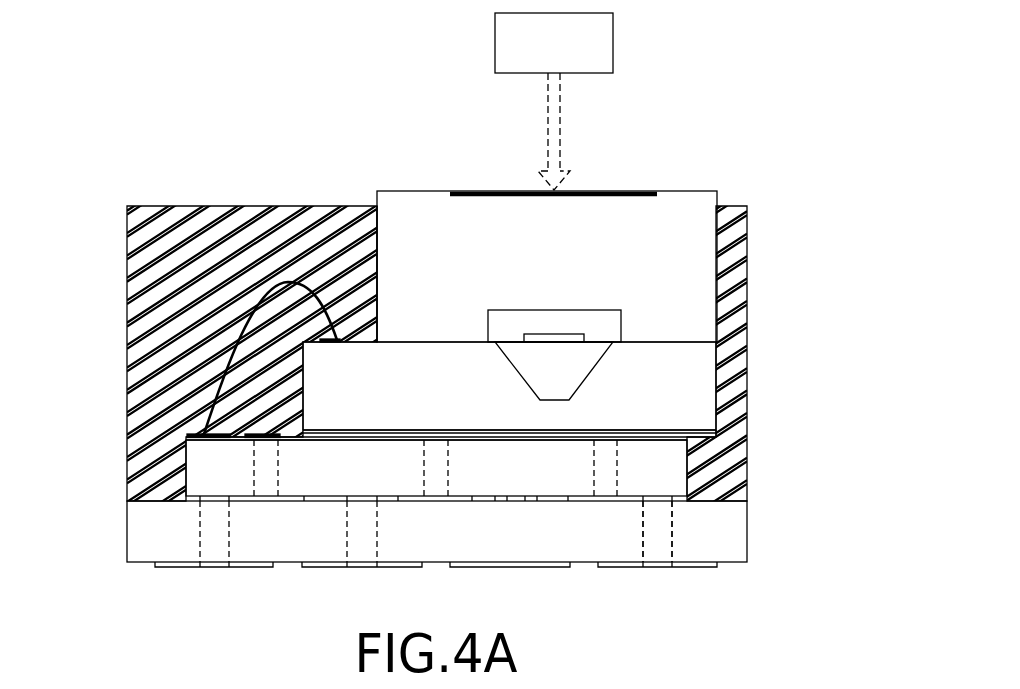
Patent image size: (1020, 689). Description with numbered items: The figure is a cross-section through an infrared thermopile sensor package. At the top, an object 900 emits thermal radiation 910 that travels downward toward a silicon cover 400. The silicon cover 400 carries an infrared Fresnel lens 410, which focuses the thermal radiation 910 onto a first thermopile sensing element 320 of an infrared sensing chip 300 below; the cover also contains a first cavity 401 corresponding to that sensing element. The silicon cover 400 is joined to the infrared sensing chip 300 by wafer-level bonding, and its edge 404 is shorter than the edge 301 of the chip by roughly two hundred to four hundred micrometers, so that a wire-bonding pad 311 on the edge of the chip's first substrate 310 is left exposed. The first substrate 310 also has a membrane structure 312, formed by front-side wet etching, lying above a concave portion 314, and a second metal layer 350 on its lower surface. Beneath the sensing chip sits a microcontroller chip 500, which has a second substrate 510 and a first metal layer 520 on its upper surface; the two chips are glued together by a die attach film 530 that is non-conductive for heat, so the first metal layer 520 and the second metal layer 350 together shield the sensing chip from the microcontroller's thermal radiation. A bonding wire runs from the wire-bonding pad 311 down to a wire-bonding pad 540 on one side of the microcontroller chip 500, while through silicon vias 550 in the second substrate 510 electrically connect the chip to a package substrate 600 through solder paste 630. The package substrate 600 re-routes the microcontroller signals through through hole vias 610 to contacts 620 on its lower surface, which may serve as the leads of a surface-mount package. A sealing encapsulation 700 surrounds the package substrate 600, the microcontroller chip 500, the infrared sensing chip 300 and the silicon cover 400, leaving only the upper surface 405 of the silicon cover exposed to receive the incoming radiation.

The infrared sensing chip 300 is at (728, 362).
The edge of the infrared sensing chip 301 is at (303, 388).
The first substrate 310 is at (335, 395).
The wire-bonding pad 311 is at (337, 338).
The membrane structure 312 is at (512, 338).
The concave portion 314 is at (580, 365).
The first thermopile sensing element 320 is at (555, 337).
The second metal layer 350 is at (697, 432).
The silicon cover 400 is at (728, 242).
The first cavity 401 is at (607, 323).
The edge of the silicon cover 404 is at (376, 247).
The upper surface of the silicon cover 405 is at (687, 191).
The infrared Fresnel lens 410 is at (583, 191).
The microcontroller chip 500 is at (707, 457).
The second substrate 510 is at (208, 465).
The first metal layer 520 is at (698, 470).
The die attach film 530 is at (673, 440).
The wire-bonding pad 540 is at (207, 437).
The through silicon vias 550 is at (605, 477).
The package substrate 600 is at (756, 535).
The through hole vias 610 is at (663, 528).
The contacts 620 is at (693, 563).
The solder paste 630 is at (322, 498).
The sealing encapsulation 700 is at (197, 217).
The object 900 is at (554, 43).
The thermal radiation 910 is at (552, 115).